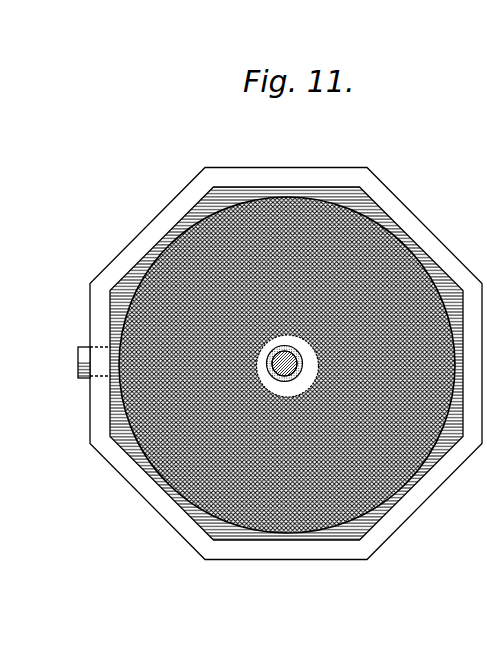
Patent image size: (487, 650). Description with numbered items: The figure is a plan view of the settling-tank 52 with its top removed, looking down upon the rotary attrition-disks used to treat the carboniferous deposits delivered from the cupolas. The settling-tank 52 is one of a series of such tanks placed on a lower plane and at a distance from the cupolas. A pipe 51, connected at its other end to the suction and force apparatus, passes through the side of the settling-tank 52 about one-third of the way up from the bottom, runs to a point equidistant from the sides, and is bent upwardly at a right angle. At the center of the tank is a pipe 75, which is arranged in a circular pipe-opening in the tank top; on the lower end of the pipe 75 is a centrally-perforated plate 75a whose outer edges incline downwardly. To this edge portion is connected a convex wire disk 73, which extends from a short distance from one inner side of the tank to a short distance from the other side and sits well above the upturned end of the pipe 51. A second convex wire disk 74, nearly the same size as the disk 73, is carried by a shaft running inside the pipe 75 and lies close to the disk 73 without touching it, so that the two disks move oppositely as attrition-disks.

The pipe 51 is at (78, 362).
The settling-tank 52 is at (268, 364).
The convex wire disk 73 is at (153, 247).
The convex wire disk 74 is at (296, 367).
The pipe 75 is at (277, 351).
The centrally-perforated plate 75a is at (289, 352).